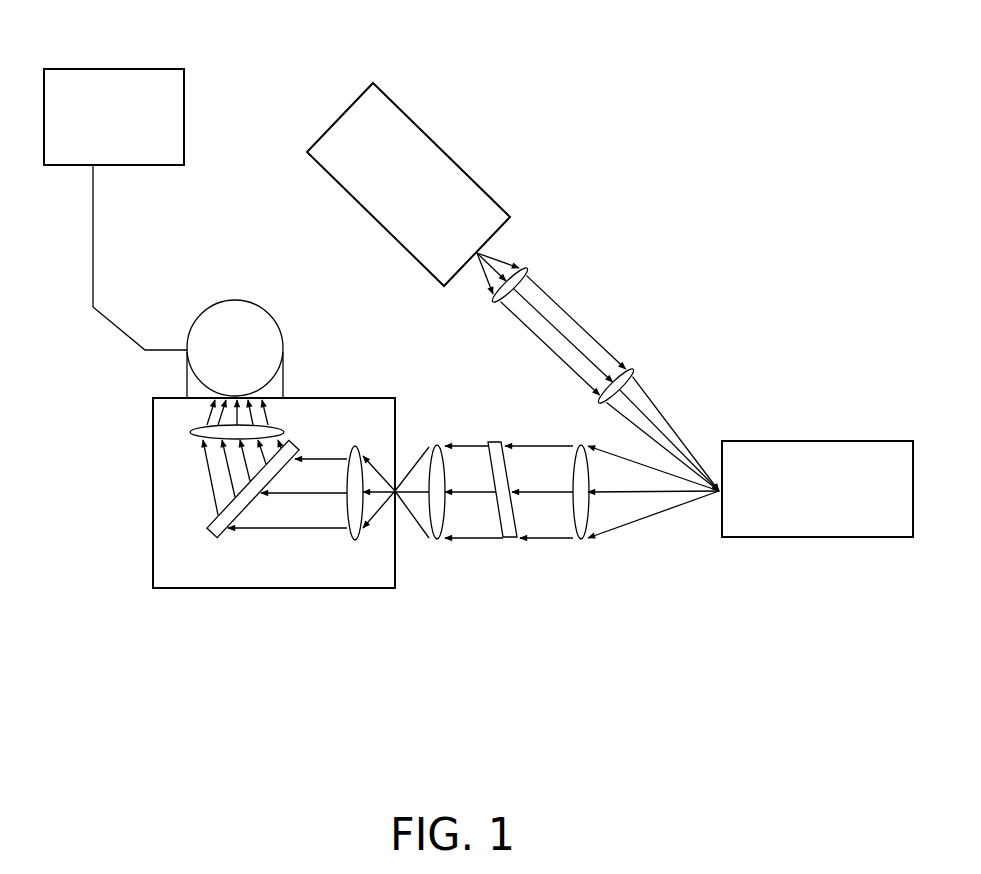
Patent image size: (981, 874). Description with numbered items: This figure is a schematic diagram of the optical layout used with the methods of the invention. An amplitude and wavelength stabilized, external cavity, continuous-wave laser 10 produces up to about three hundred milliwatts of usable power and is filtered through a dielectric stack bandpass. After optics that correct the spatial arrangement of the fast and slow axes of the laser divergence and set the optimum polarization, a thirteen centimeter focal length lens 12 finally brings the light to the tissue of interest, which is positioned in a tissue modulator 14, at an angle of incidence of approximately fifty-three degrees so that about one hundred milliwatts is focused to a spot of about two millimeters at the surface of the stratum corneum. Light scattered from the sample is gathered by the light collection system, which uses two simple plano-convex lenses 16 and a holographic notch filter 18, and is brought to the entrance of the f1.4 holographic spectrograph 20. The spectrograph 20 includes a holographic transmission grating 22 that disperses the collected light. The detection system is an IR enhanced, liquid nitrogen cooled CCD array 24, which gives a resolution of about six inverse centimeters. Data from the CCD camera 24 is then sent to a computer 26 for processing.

The CW laser 10 is at (428, 135).
The lens 12 is at (625, 347).
The tissue modulator 14 is at (833, 537).
The plano-convex lenses 16 is at (437, 550).
The holographic notch filter 18 is at (513, 537).
The holographic spectrograph 20 is at (285, 588).
The holographic transmission grating 22 is at (202, 532).
The CCD array 24 is at (235, 300).
The computer 26 is at (87, 69).